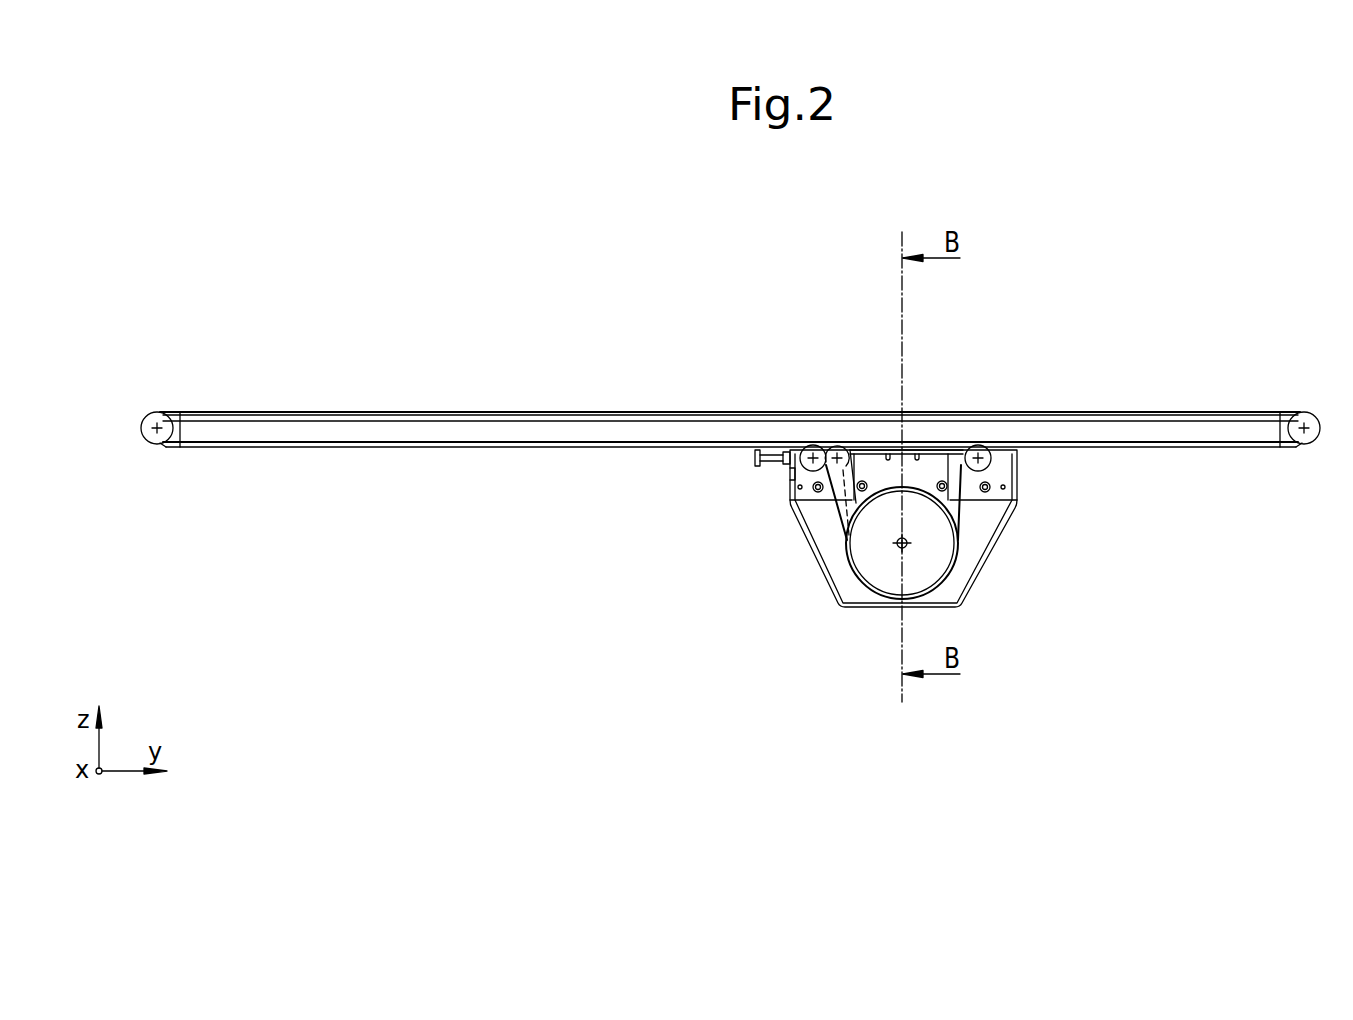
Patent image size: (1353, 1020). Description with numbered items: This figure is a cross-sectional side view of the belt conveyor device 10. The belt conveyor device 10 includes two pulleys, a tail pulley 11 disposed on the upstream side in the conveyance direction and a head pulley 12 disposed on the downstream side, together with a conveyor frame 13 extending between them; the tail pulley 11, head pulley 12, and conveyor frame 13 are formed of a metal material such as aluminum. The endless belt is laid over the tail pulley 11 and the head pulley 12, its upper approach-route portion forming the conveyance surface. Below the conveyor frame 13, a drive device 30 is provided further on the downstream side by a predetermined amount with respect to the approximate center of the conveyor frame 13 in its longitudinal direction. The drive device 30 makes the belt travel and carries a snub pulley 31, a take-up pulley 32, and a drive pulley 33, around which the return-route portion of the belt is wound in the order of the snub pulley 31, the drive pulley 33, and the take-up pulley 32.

The belt conveyor device 10 is at (533, 339).
The tail pulley 11 is at (160, 411).
The head pulley 12 is at (1306, 411).
The conveyor frame 13 is at (1200, 416).
The drive device 30 is at (1000, 571).
The snub pulley 31 is at (988, 459).
The take-up pulley 32 is at (790, 474).
The drive pulley 33 is at (863, 587).